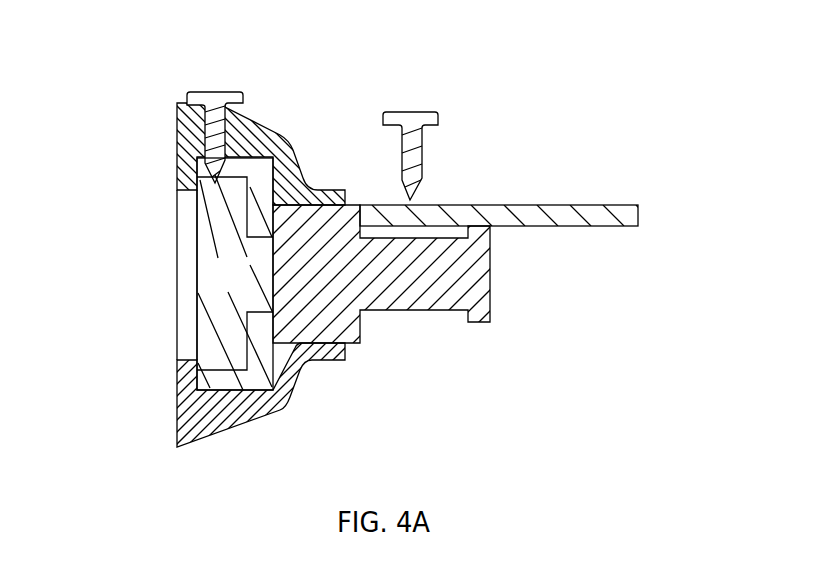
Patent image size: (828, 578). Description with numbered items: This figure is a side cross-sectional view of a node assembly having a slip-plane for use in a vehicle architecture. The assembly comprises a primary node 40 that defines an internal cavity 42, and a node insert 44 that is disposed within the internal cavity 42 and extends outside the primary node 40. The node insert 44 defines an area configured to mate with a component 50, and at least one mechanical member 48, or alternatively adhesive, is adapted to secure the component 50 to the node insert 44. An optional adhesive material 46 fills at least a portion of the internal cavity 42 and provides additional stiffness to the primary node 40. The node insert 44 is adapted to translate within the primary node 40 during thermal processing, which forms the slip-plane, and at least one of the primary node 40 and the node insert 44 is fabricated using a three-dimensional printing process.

The primary node 40 is at (178, 177).
The internal cavity 42 is at (178, 305).
The node insert 44 is at (423, 302).
The adhesive material 46 is at (243, 281).
The mechanical member 48 is at (410, 118).
The component 50 is at (602, 210).